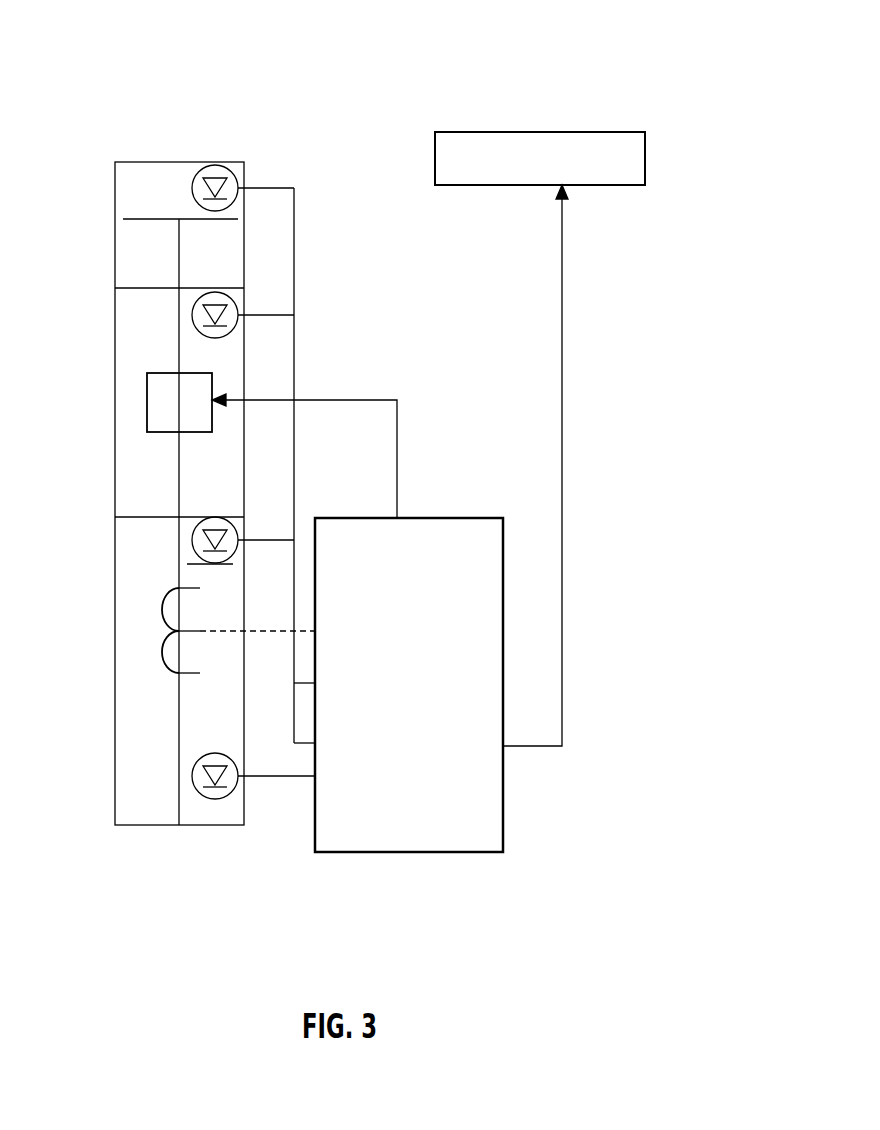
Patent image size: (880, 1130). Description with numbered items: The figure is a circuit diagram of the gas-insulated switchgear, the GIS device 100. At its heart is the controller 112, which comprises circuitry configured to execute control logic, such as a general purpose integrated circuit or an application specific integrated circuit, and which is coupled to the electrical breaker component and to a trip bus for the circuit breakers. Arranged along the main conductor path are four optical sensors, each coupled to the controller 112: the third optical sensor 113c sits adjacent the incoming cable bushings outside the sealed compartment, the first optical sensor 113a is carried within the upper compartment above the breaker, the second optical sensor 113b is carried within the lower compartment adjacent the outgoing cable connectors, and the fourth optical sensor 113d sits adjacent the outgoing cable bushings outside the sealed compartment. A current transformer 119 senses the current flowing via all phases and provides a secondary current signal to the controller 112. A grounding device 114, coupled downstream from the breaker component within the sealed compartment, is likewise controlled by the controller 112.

The GIS device 100 is at (655, 68).
The controller 112 is at (428, 518).
The first optical sensor 113a is at (215, 292).
The second optical sensor 113b is at (193, 548).
The third optical sensor 113c is at (215, 168).
The fourth optical sensor 113d is at (207, 797).
The grounding device 114 is at (145, 397).
The current transformer 119 is at (167, 670).